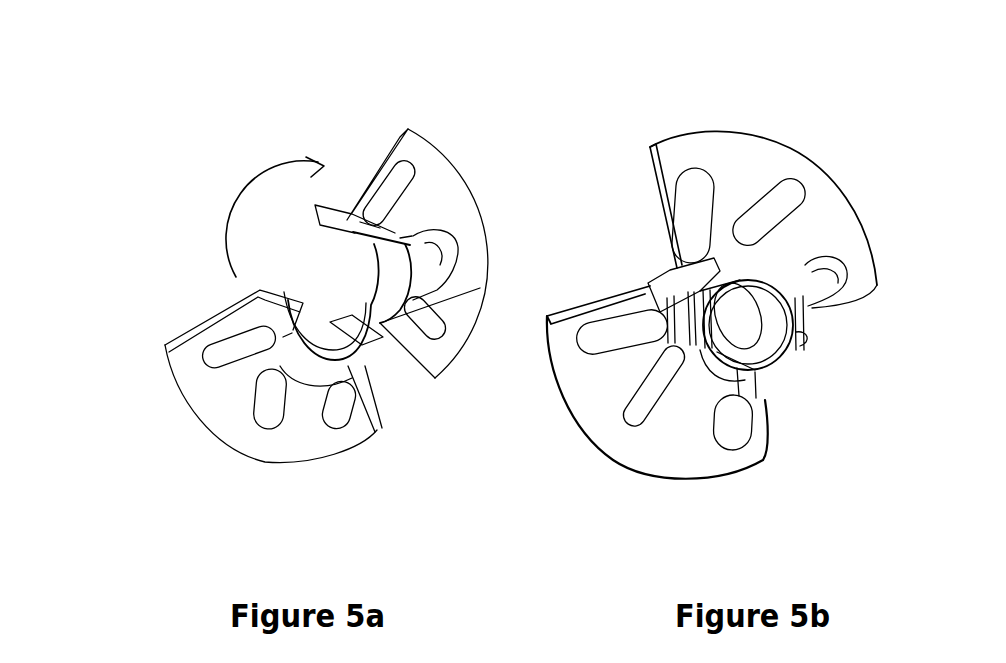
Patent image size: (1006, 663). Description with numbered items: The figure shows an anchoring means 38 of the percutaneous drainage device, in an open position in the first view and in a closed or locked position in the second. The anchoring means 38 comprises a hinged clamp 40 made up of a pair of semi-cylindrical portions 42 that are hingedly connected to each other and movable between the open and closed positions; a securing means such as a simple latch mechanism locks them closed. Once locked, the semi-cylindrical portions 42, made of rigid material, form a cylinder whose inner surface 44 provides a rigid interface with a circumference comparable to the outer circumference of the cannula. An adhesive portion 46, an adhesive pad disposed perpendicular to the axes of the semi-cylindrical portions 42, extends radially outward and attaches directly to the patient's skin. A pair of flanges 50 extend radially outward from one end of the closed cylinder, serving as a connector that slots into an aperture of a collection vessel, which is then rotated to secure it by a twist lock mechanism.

In FIG. 5A, the anchoring means 38 is at (182, 116).
In FIG. 5A, the hinged clamp 40 is at (383, 347).
In FIG. 5B, the hinged clamp 40 is at (737, 273).
In FIG. 5A, the semi-cylindrical portions 42 is at (410, 243).
In FIG. 5B, the semi-cylindrical portions 42 is at (807, 328).
In FIG. 5A, the inner surface 44 is at (393, 294).
In FIG. 5B, the inner surface 44 is at (763, 347).
In FIG. 5A, the adhesive portion 46 is at (200, 400).
In FIG. 5B, the adhesive portion 46 is at (823, 203).
In FIG. 5A, the flanges 50 is at (433, 260).
In FIG. 5B, the flanges 50 is at (800, 285).